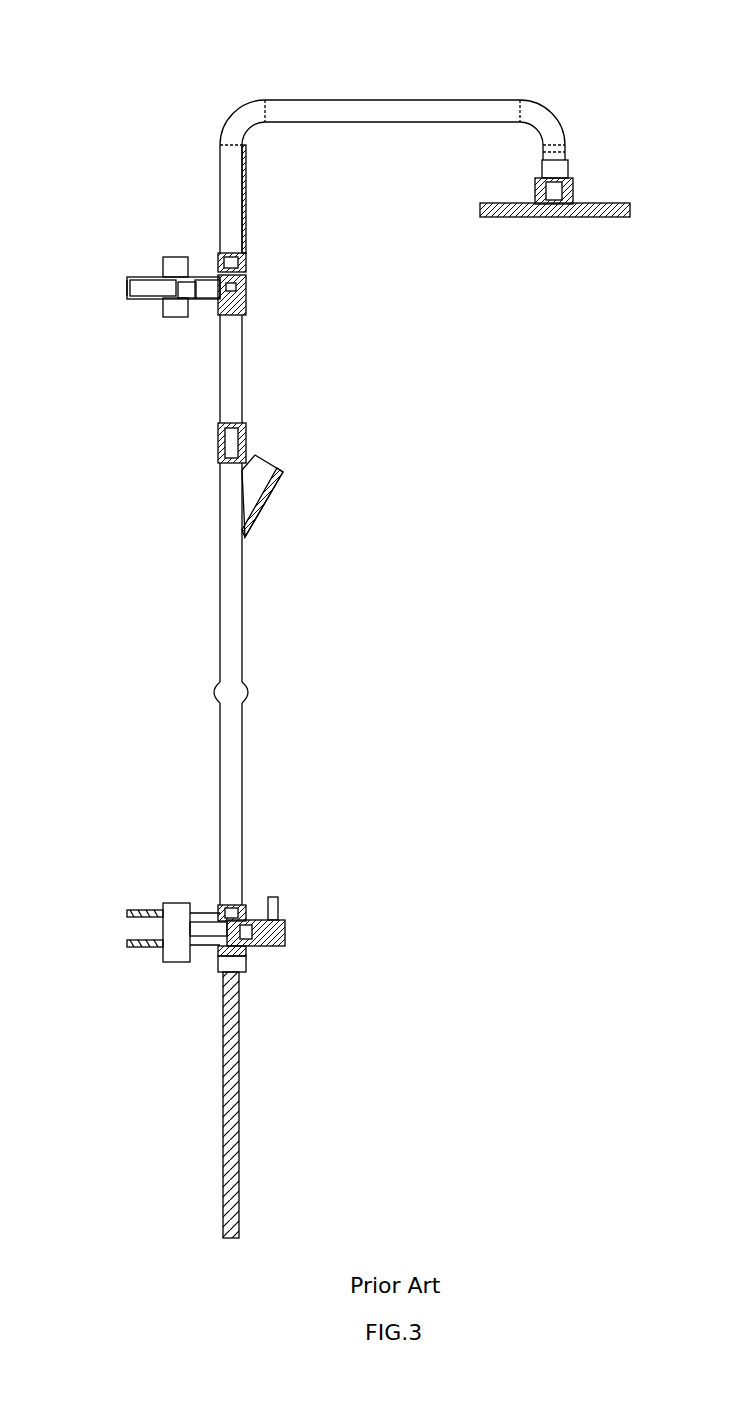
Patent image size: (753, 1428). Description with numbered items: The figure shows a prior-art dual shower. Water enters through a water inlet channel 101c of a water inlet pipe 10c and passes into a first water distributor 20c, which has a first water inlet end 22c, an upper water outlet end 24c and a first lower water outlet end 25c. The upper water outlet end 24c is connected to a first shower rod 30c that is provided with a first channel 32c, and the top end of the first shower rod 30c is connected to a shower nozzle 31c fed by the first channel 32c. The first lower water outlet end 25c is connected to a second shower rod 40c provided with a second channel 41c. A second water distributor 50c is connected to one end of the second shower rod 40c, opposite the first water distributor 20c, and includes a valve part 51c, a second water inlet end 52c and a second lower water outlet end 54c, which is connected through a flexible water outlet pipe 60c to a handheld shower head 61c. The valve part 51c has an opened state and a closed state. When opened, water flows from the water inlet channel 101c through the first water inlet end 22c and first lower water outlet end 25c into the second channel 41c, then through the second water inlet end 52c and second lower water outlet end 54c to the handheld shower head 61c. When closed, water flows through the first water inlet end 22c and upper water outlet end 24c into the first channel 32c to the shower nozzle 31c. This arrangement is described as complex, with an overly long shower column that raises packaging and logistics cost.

The water inlet pipe 10c is at (137, 275).
The water inlet channel 101c is at (147, 302).
The first water distributor 20c is at (218, 273).
The first water inlet end 22c is at (213, 300).
The upper water outlet end 24c is at (243, 262).
The first lower water outlet end 25c is at (246, 313).
The first shower rod 30c is at (353, 100).
The shower nozzle 31c is at (628, 218).
The first channel 32c is at (233, 185).
The second shower rod 40c is at (245, 387).
The second channel 41c is at (218, 415).
The second water distributor 50c is at (288, 920).
The valve part 51c is at (255, 952).
The second water inlet end 52c is at (222, 908).
The second lower water outlet end 54c is at (225, 950).
The flexible water outlet pipe 60c is at (240, 1093).
The handheld shower head 61c is at (262, 478).